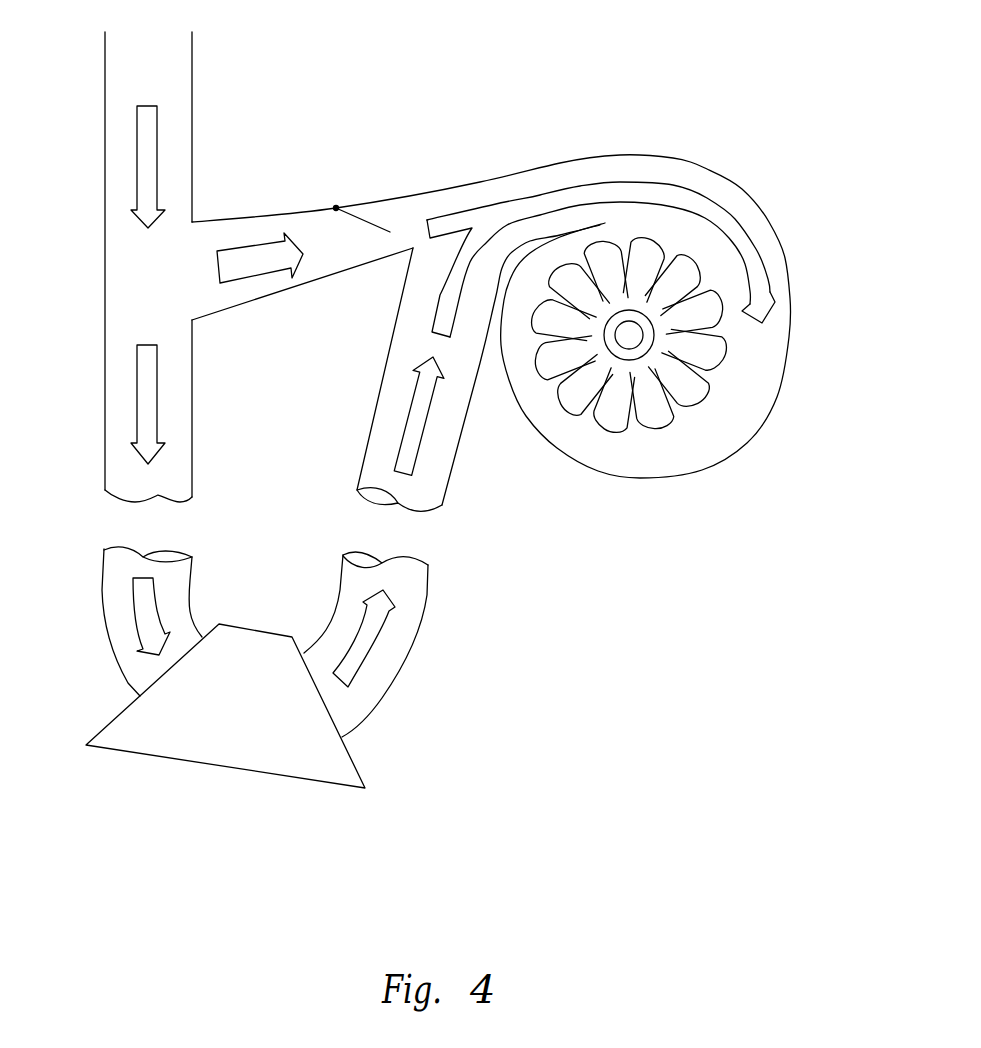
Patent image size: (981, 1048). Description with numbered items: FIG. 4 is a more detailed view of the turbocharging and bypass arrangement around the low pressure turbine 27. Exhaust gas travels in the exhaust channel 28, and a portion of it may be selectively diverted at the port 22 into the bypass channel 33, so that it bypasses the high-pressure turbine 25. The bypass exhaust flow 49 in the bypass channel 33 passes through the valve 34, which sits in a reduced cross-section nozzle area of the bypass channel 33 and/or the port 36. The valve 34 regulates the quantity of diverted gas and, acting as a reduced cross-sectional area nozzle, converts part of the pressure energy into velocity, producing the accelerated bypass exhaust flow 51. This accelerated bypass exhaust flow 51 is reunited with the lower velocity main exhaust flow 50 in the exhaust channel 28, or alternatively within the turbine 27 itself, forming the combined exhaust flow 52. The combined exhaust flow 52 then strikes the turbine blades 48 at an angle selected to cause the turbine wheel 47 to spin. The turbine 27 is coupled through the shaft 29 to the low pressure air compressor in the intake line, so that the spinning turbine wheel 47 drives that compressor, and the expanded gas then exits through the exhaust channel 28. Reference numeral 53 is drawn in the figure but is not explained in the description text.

The port 22 is at (195, 275).
The high-pressure turbine 25 is at (185, 760).
The low pressure turbine 27 is at (701, 386).
The exhaust channel 28 is at (117, 307).
The shaft 29 is at (630, 340).
The bypass channel 33 is at (340, 250).
The valve 34 is at (373, 222).
The port 36 is at (408, 233).
The turbine wheel 47 is at (658, 368).
The turbine blades 48 is at (575, 413).
The bypass exhaust flow 49 is at (245, 258).
The main exhaust flow 50 is at (407, 418).
The accelerated bypass exhaust flow 51 is at (447, 223).
The combined exhaust flow 52 is at (543, 198).
The blower housing wall 53 is at (708, 173).